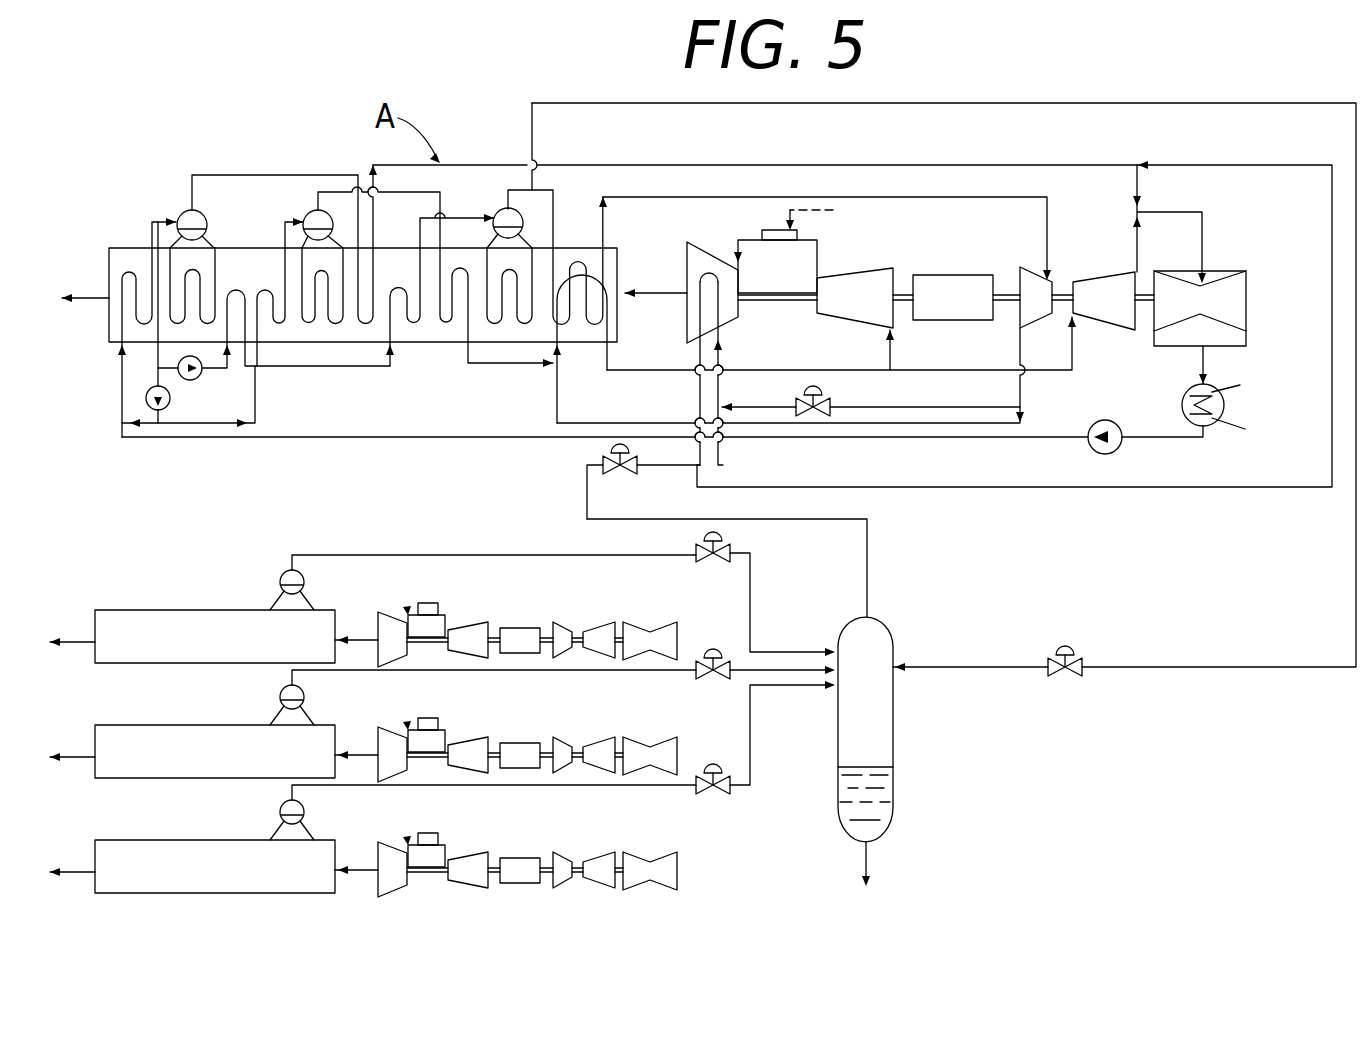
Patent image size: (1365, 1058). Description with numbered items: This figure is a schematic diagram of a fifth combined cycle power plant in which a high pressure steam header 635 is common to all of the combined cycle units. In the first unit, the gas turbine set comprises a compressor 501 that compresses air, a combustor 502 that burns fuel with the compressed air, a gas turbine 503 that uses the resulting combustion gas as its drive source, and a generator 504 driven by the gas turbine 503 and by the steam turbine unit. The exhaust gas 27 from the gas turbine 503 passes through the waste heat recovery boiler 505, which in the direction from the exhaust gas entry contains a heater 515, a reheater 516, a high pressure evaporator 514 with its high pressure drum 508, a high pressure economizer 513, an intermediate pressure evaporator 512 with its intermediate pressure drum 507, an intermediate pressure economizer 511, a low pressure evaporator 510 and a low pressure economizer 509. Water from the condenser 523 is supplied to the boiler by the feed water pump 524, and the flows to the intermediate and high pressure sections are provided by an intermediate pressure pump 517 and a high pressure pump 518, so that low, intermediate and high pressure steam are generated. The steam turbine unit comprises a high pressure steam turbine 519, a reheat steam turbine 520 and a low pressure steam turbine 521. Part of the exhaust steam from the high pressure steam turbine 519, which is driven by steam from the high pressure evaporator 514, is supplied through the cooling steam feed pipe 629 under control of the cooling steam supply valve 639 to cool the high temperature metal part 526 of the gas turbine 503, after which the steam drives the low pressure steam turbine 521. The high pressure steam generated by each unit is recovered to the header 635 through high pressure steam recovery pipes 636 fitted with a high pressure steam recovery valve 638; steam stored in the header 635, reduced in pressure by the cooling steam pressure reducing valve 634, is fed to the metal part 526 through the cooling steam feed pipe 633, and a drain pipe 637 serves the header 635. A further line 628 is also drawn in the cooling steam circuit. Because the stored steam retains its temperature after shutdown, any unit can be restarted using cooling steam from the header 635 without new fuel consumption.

The exhaust gas 27 is at (655, 300).
The compressor 501 is at (850, 290).
The combustor 502 is at (765, 230).
The gas turbine 503 is at (727, 303).
The generator 504 is at (948, 290).
The waste heat recovery boiler 505 is at (137, 247).
The intermediate pressure drum 507 is at (313, 210).
The high pressure drum 508 is at (503, 210).
The low pressure economizer 509 is at (127, 268).
The low pressure evaporator 510 is at (195, 283).
The intermediate pressure economizer 511 is at (276, 320).
The intermediate pressure evaporator 512 is at (332, 320).
The high pressure economizer 513 is at (418, 318).
The high pressure evaporator 514 is at (503, 320).
The heater 515 is at (580, 262).
The reheater 516 is at (577, 320).
The intermediate pressure pump 517 is at (146, 400).
The high pressure pump 518 is at (192, 378).
The high pressure steam turbine 519 is at (1030, 310).
The reheat steam turbine 520 is at (1107, 310).
The low pressure steam turbine 521 is at (1225, 290).
The condenser 523 is at (1240, 397).
The feed water pump 524 is at (1117, 446).
The high temperature metal part 526 is at (716, 270).
The water line 628 is at (897, 487).
The cooling steam feed pipe 629 is at (897, 408).
The cooling steam feed pipe 633 is at (722, 452).
The cooling steam pressure reducing valve 634 is at (610, 447).
The high pressure steam header 635 is at (890, 737).
The high pressure steam recovery pipe 636 is at (1213, 664).
The drain pipe 637 is at (870, 868).
The high pressure steam recovery valve 638 is at (1064, 650).
The cooling steam supply valve 639 is at (818, 392).